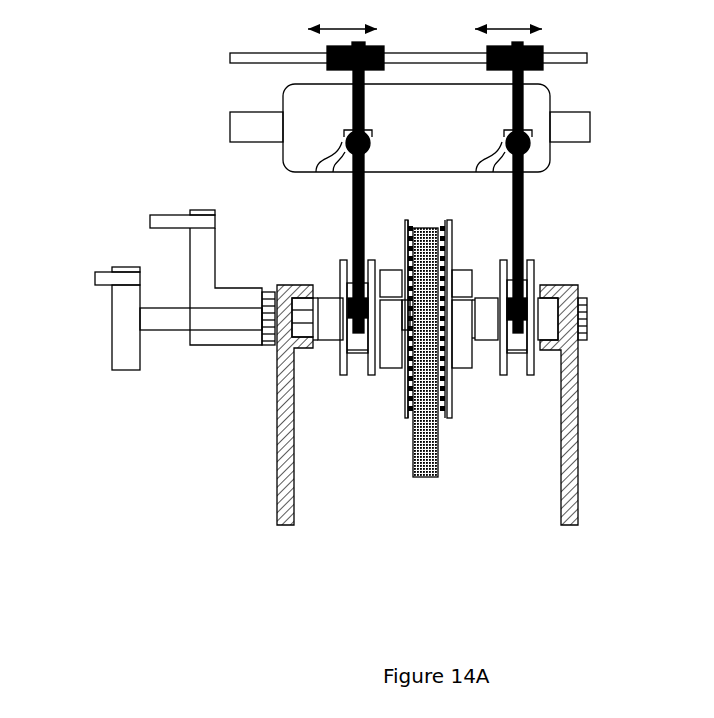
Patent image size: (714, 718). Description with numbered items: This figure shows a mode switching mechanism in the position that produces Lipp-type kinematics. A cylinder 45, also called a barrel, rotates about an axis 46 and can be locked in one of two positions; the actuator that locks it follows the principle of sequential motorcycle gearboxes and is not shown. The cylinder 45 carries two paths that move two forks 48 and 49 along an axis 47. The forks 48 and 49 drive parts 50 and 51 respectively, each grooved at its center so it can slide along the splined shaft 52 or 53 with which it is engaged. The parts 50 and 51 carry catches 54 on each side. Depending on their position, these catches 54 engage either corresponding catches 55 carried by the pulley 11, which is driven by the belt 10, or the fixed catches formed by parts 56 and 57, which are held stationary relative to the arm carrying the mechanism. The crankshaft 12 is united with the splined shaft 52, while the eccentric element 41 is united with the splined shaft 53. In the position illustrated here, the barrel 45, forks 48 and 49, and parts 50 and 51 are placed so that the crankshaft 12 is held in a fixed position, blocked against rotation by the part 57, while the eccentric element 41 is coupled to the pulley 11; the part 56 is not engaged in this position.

The belt 10 is at (429, 458).
The pulley 11 is at (449, 421).
The crankshaft 12 is at (141, 340).
The eccentric element 41 is at (189, 212).
The cylinder 45 is at (454, 140).
The axis 46 is at (584, 131).
The axis 47 is at (581, 59).
The fork 48 is at (528, 223).
The fork 49 is at (347, 206).
The part 50 is at (537, 268).
The part 51 is at (338, 265).
The splined shaft 52 is at (589, 315).
The splined shaft 53 is at (268, 292).
The catches 54 is at (388, 319).
The catches 55 is at (426, 271).
The part 56 is at (276, 517).
The part 57 is at (579, 524).